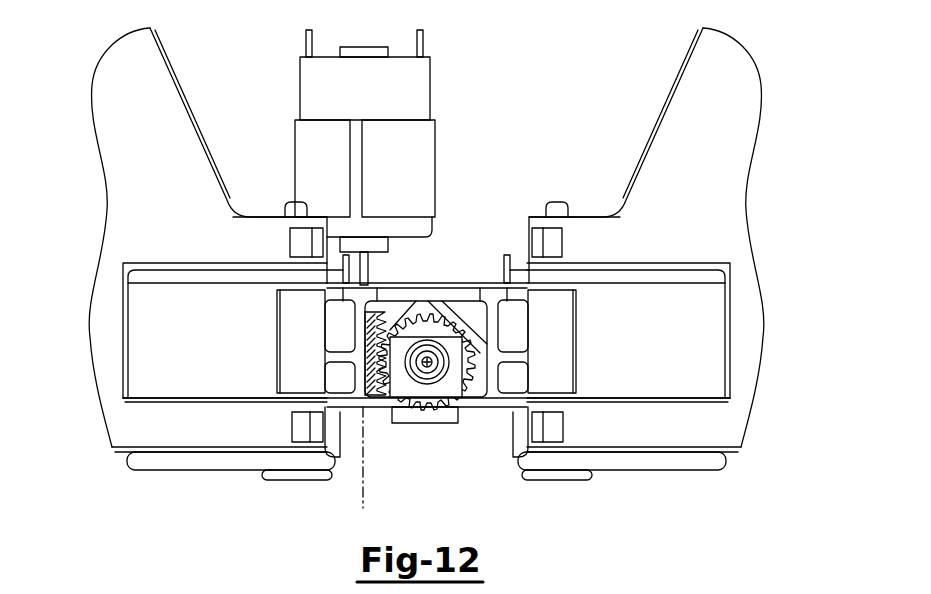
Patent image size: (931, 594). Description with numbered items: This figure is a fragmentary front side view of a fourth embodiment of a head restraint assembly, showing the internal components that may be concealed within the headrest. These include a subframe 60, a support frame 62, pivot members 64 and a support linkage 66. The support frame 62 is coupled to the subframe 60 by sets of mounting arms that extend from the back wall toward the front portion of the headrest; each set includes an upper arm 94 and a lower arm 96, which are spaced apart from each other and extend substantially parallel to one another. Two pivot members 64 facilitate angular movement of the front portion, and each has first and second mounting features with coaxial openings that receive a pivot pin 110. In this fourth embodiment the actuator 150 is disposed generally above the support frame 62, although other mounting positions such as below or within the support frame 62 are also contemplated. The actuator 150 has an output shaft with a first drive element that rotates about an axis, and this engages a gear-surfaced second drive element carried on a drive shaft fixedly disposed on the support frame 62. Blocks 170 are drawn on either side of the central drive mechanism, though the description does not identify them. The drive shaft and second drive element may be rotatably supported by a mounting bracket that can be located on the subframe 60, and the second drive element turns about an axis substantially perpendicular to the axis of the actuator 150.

The pivot member 64 is at (108, 78).
The support frame 62 is at (144, 258).
The support linkage 66 is at (150, 365).
The lower arm 96 is at (168, 472).
The upper arm 94 is at (243, 278).
The pivot pin 110 is at (295, 200).
The actuator 150 is at (376, 101).
The subframe 60 is at (478, 283).
The block 170 is at (290, 325).